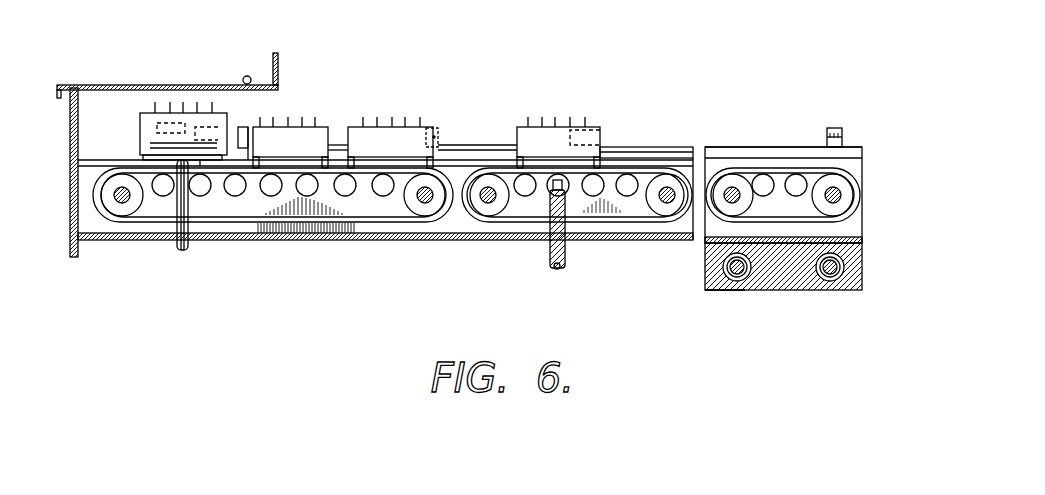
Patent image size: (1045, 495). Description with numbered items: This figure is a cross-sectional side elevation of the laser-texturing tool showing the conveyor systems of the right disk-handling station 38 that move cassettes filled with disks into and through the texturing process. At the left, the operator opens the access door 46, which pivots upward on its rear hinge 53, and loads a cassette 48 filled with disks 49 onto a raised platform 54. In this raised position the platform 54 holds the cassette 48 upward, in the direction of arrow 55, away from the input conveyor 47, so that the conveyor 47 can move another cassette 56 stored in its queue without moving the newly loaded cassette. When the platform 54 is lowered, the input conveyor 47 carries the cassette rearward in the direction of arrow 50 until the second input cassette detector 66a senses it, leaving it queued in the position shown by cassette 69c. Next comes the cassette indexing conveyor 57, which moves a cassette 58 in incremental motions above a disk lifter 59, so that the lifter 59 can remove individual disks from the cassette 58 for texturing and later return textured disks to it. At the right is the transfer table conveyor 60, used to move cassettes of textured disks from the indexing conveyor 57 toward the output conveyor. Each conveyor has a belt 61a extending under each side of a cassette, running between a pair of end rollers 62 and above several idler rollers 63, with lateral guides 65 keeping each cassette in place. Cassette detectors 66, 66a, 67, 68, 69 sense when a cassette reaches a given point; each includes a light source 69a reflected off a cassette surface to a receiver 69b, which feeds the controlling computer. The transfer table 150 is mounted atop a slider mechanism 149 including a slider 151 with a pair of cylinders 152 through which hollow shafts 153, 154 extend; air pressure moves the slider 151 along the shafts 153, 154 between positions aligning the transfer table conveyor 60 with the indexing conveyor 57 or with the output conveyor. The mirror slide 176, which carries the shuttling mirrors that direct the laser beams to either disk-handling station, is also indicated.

The right disk-handling station 38 is at (148, 315).
The access door 46 is at (95, 85).
The input conveyor 47 is at (378, 229).
The cassette 48 is at (140, 127).
The disk 49 is at (198, 110).
The arrow 50 is at (522, 66).
The rear hinge 53 is at (243, 80).
The raised platform 54 is at (152, 160).
The arrow 55 is at (223, 320).
The cassette 56 is at (292, 125).
The cassette indexing conveyor 57 is at (578, 230).
The cassette 58 is at (514, 137).
The disk lifter 59 is at (550, 257).
The transfer table conveyor 60 is at (735, 163).
The belt 61a is at (620, 170).
The end rollers 62 is at (648, 207).
The idler rollers 63 is at (528, 197).
The lateral guides 65 is at (662, 147).
The cassette detector 66 is at (235, 150).
The second input cassette detector 66a is at (437, 136).
The cassette detector 67 is at (243, 127).
The cassette detector 68 is at (602, 137).
The cassette detector 69 is at (823, 143).
The light source 69a is at (840, 128).
The receiver 69b is at (827, 137).
The cassette 69c is at (365, 125).
The slider mechanism 149 is at (775, 294).
The transfer table 150 is at (787, 234).
The slider 151 is at (713, 290).
The cylinders 152 is at (728, 290).
The hollow shaft 153 is at (827, 290).
The hollow shaft 154 is at (735, 290).
The mirror slide 176 is at (138, 112).